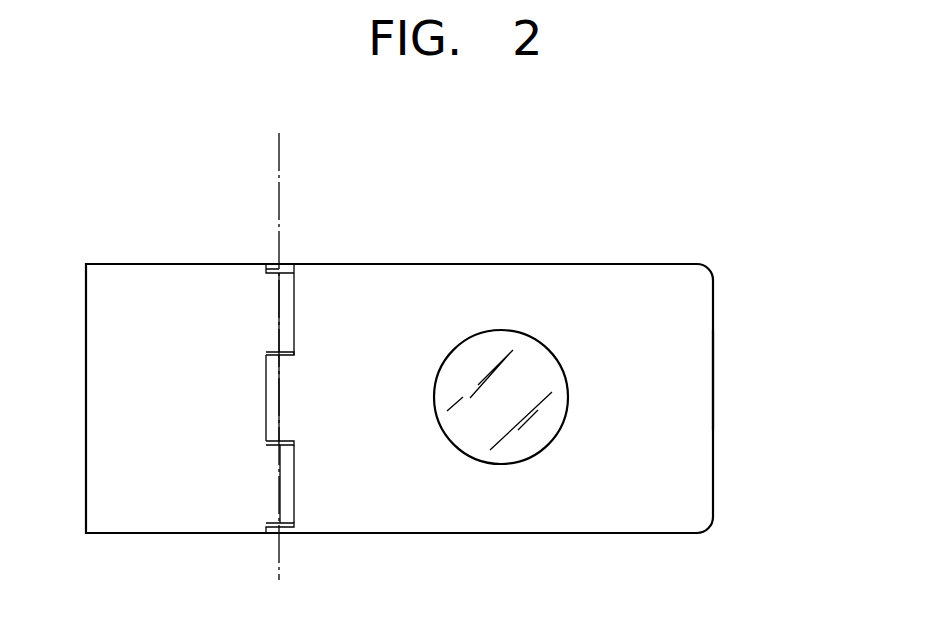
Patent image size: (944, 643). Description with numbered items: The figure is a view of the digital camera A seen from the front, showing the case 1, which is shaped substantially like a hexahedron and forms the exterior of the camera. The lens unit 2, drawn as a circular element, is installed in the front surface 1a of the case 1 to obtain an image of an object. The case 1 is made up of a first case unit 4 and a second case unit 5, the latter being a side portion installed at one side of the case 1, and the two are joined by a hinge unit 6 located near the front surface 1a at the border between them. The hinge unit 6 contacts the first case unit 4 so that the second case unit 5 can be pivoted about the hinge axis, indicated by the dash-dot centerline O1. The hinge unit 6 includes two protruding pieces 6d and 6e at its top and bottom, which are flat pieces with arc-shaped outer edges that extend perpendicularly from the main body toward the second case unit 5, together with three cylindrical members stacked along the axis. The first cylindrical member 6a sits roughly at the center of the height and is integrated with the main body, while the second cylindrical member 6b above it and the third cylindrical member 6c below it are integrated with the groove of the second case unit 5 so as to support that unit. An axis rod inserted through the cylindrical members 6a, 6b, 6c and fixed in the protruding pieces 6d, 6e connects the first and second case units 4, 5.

The case 1 is at (650, 169).
The digital camera A is at (730, 197).
The front surface 1a is at (690, 376).
The lens unit 2 is at (548, 427).
The first case unit 4 is at (532, 259).
The second case unit 5 is at (190, 261).
The hinge unit 6 is at (284, 262).
The first cylindrical member 6a is at (285, 398).
The second cylindrical member 6b is at (275, 310).
The third cylindrical member 6c is at (275, 480).
The protruding piece 6d is at (289, 265).
The protruding piece 6e is at (288, 534).
The hinge axis O1 is at (274, 343).